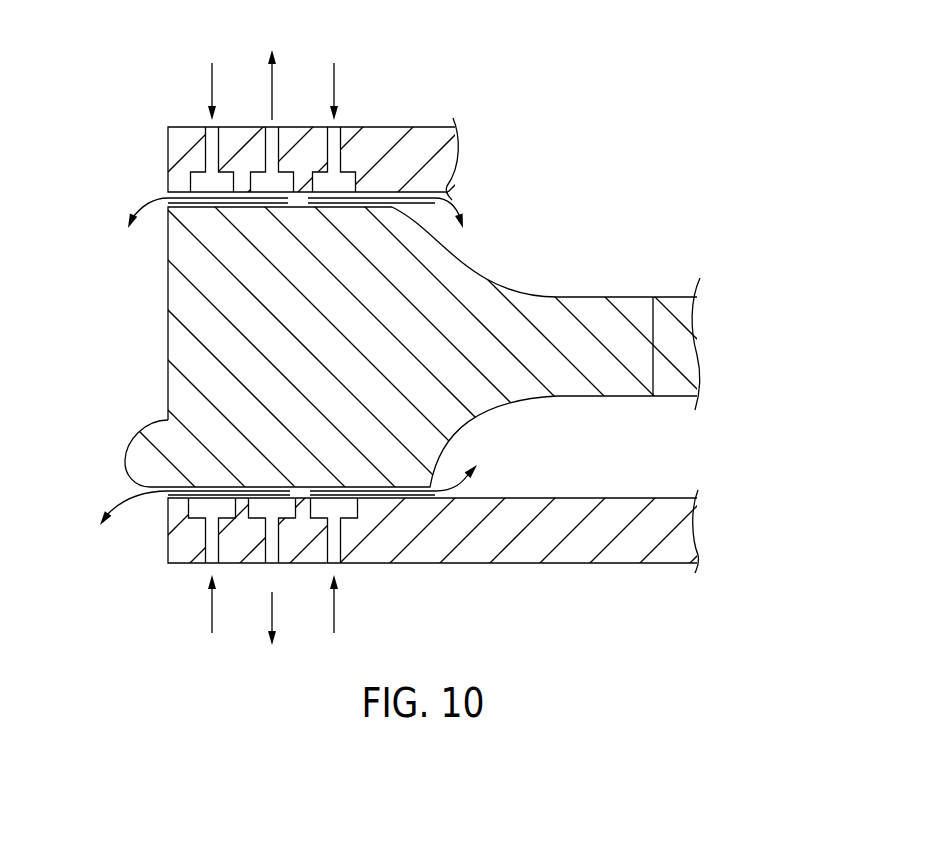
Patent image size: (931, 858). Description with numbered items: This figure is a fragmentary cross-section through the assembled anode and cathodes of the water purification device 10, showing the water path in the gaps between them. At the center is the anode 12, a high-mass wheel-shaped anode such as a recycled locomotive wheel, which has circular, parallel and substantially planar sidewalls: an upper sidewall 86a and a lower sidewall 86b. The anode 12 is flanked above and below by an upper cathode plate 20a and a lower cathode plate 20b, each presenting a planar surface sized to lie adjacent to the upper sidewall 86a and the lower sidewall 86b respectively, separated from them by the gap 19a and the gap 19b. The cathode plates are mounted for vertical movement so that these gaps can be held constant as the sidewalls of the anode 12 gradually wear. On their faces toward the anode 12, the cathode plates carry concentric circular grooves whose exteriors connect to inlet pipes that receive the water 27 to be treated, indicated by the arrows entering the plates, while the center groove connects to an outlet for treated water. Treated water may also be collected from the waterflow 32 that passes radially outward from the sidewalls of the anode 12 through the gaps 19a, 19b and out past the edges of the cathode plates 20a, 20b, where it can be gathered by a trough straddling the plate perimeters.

The water purification device 10 is at (716, 180).
The anode 12 is at (197, 305).
The gap 19a is at (140, 188).
The gap 19b is at (247, 500).
The upper cathode plate 20a is at (413, 127).
The lower cathode plate 20b is at (460, 556).
The water 27 is at (213, 82).
The waterflow 32 is at (155, 208).
The upper sidewall 86a is at (452, 252).
The lower sidewall 86b is at (160, 428).